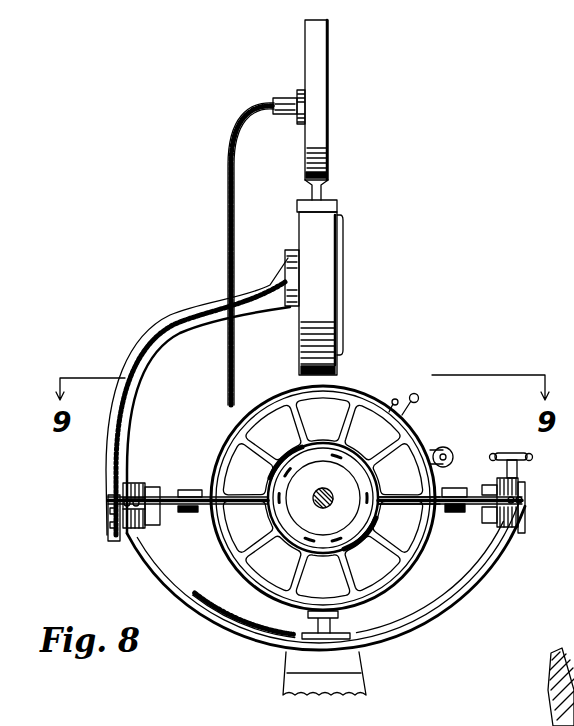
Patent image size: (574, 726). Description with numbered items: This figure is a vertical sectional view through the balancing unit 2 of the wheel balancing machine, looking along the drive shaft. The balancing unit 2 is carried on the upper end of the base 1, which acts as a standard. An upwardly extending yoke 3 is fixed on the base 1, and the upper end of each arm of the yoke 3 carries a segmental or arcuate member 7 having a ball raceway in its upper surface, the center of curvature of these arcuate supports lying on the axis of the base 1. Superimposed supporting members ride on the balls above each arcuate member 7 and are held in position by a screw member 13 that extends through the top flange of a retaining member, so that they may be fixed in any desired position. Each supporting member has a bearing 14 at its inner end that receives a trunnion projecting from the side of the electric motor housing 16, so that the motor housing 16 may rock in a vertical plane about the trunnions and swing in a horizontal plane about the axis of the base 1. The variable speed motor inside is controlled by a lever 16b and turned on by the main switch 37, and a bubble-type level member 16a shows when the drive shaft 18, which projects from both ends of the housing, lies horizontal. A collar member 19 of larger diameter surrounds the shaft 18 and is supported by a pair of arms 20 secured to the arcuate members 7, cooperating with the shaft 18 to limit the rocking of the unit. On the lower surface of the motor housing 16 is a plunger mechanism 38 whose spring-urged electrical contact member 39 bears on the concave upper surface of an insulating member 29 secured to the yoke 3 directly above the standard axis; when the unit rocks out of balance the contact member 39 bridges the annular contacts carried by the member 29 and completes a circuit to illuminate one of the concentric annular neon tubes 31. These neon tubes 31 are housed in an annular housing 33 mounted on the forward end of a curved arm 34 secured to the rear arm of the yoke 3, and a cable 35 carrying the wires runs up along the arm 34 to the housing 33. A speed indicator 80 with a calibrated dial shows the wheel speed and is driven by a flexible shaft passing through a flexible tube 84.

The base 1 is at (360, 681).
The balancing unit 2 is at (407, 580).
The yoke 3 is at (490, 586).
The arcuate member 7 is at (488, 511).
The screw member 13 is at (517, 469).
The bearing 14 is at (456, 491).
The electric motor housing 16 is at (246, 555).
The level member 16a is at (444, 455).
The lever 16b is at (419, 398).
The drive shaft 18 is at (324, 513).
The collar member 19 is at (322, 552).
The arms 20 is at (405, 504).
The member 29 is at (314, 637).
The neon tube 31 is at (343, 286).
The annular housing 33 is at (328, 259).
The curved arm 34 is at (183, 318).
The cable 35 is at (176, 339).
The main switch 37 is at (394, 399).
The plunger mechanism 38 is at (333, 619).
The electrical contact member 39 is at (326, 648).
The speed indicator 80 is at (318, 94).
The flexible tube 84 is at (228, 193).